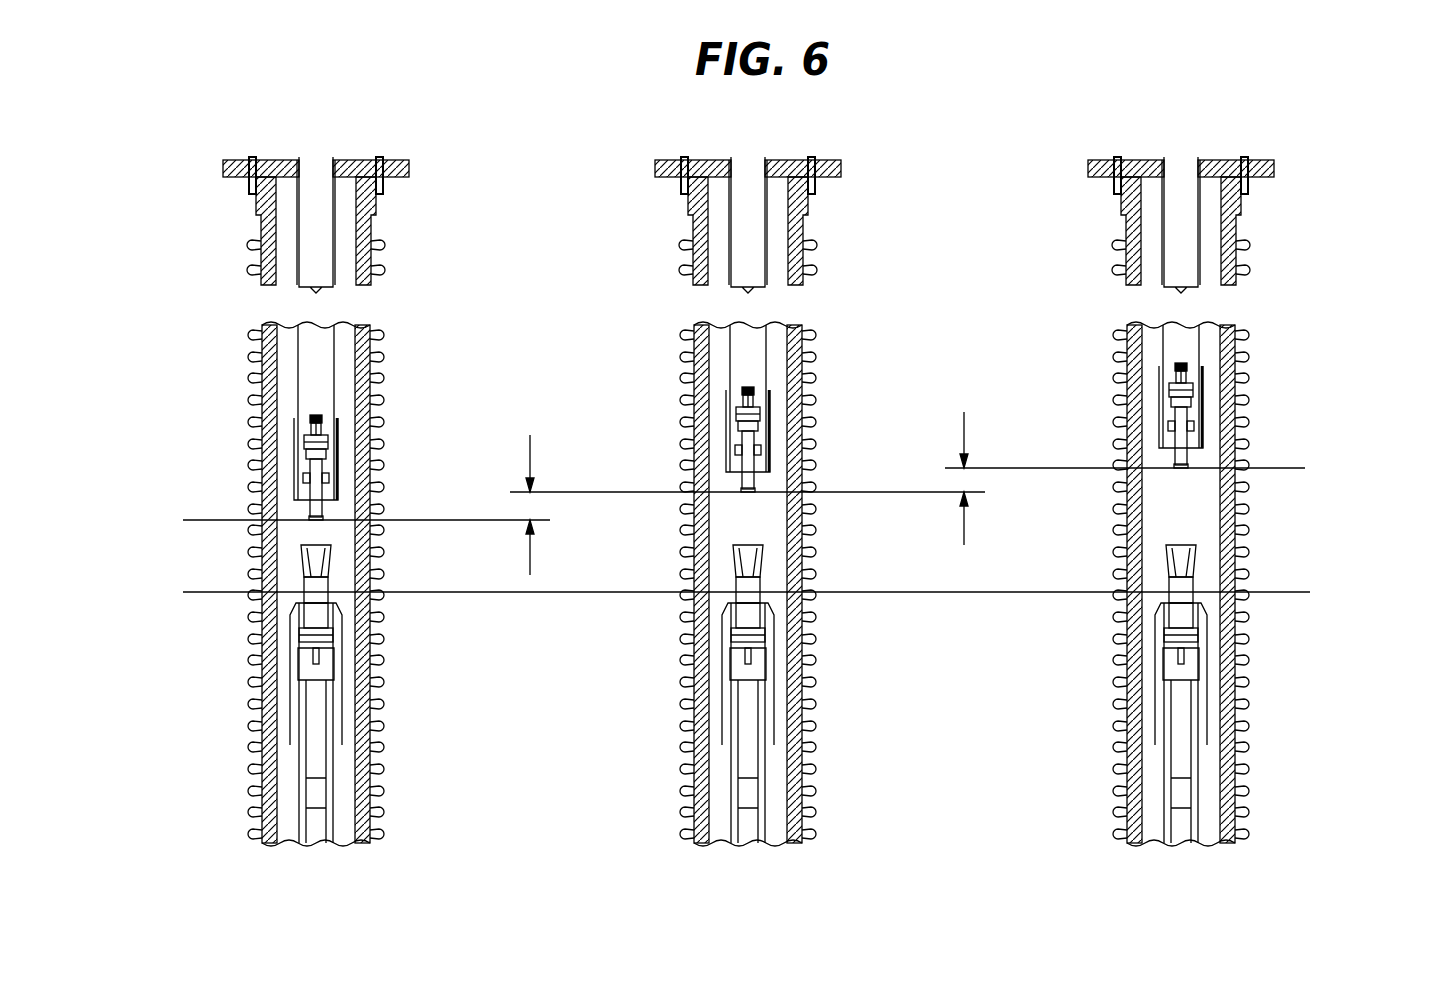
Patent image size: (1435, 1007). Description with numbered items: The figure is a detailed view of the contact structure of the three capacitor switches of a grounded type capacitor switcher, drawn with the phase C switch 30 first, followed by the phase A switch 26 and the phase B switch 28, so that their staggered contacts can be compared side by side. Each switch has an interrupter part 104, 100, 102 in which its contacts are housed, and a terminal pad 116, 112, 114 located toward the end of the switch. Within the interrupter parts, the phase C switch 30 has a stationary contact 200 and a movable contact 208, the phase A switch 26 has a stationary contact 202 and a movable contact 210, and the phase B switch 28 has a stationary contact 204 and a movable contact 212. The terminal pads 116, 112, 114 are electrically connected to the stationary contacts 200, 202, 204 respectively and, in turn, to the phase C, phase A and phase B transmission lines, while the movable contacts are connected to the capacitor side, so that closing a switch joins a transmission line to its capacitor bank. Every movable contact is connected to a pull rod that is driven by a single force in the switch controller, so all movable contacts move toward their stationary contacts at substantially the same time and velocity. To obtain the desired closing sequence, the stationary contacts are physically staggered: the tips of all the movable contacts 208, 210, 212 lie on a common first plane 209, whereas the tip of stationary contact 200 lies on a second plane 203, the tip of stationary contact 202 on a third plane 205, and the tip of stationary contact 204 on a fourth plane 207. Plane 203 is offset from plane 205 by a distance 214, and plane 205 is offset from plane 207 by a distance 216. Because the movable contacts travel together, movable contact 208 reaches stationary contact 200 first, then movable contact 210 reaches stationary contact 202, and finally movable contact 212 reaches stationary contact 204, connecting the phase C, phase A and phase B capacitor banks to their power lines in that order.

The phase C capacitor switch 30 is at (170, 322).
The phase A capacitor switch 26 is at (602, 322).
The phase B capacitor switch 28 is at (1035, 322).
The terminal pad 116 is at (270, 158).
The terminal pad 112 is at (702, 158).
The terminal pad 114 is at (1134, 158).
The interrupter part 104 is at (254, 617).
The interrupter part 100 is at (686, 617).
The interrupter part 102 is at (1119, 617).
The stationary contact 200 is at (312, 515).
The stationary contact 202 is at (757, 490).
The stationary contact 204 is at (1190, 466).
The movable contact 208 is at (318, 598).
The movable contact 210 is at (750, 598).
The movable contact 212 is at (1183, 598).
The second plane 203 is at (432, 521).
The third plane 205 is at (865, 493).
The fourth plane 207 is at (1305, 468).
The first plane 209 is at (1310, 592).
The distance 214 is at (528, 503).
The distance 216 is at (962, 483).